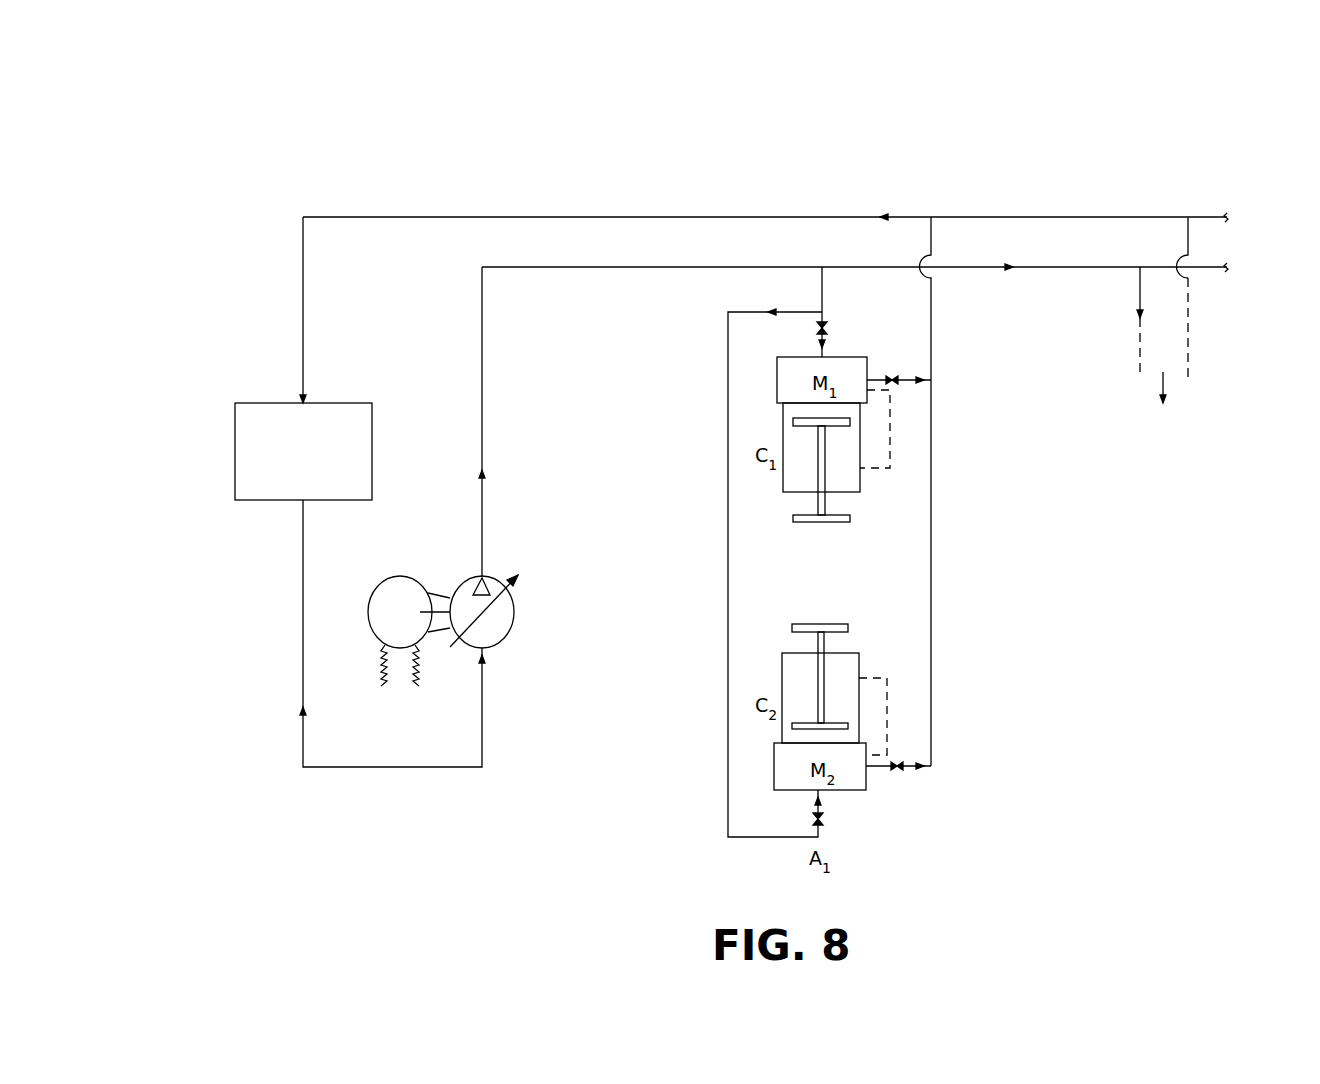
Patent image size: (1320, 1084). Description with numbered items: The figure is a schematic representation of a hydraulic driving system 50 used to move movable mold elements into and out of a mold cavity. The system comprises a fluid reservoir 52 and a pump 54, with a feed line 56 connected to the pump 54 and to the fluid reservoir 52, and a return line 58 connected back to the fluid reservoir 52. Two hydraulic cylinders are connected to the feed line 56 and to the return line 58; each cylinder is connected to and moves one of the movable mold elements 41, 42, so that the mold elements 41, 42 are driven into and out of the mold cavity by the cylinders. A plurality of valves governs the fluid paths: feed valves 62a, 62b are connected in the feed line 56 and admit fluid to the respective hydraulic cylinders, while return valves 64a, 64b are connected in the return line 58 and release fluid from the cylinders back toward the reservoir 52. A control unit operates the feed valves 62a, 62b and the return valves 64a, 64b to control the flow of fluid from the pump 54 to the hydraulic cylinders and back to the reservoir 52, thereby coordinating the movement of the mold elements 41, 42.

The driving system 50 is at (885, 124).
The fluid reservoir 52 is at (235, 465).
The pump 54 is at (514, 620).
The feed line 56 is at (537, 268).
The return line 58 is at (537, 216).
The feed valve 62a is at (827, 326).
The feed valve 62b is at (822, 824).
The return valve 64a is at (891, 378).
The return valve 64b is at (900, 769).
The movable mold element 41 is at (793, 521).
The movable mold element 42 is at (792, 628).